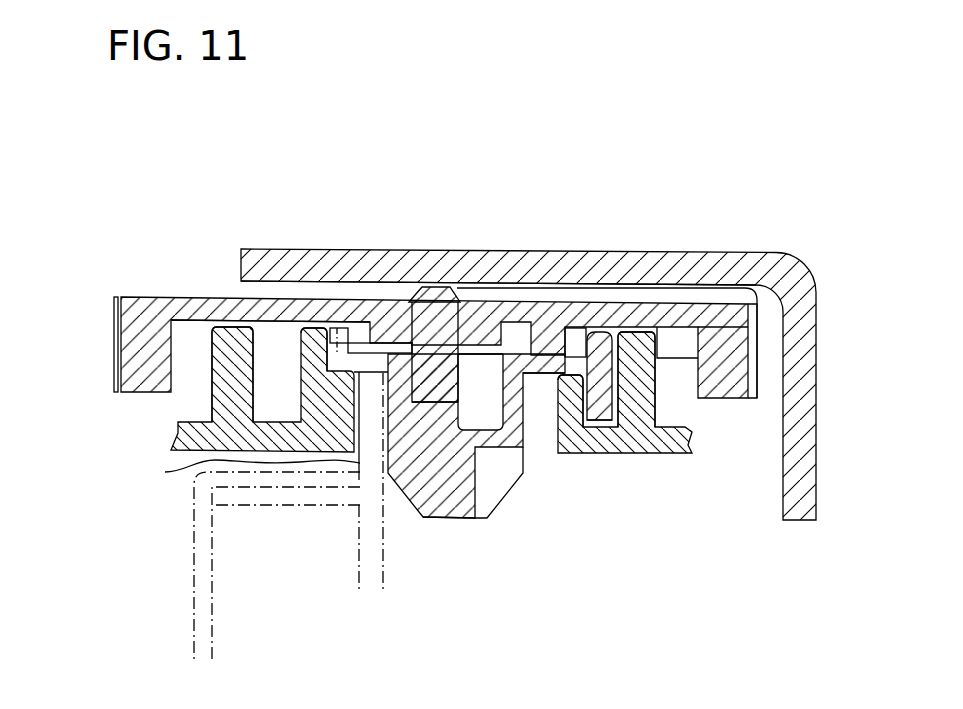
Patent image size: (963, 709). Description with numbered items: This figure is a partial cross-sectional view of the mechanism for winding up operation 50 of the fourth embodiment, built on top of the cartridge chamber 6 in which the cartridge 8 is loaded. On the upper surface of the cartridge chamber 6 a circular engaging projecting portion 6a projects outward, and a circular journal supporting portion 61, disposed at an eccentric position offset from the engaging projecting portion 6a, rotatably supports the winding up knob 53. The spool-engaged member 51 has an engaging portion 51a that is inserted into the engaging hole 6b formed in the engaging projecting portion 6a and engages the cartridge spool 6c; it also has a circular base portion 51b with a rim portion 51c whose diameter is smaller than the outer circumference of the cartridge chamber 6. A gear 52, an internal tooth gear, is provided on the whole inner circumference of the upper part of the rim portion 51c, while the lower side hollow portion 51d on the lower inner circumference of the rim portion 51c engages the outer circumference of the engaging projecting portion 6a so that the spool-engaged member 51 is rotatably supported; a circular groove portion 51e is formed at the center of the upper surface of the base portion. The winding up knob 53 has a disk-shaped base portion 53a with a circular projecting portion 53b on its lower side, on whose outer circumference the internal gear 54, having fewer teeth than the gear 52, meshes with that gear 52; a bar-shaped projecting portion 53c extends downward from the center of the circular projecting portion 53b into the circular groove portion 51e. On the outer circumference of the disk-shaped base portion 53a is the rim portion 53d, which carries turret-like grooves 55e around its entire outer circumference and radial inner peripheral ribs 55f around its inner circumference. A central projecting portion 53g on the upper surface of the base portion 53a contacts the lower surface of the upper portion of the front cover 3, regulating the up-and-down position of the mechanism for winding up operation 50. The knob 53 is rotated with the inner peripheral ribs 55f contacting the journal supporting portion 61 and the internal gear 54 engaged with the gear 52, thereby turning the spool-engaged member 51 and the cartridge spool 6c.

The front cover 3 is at (807, 262).
The mechanism for winding up operation 50 is at (108, 346).
The spool-engaged member 51 is at (510, 512).
The engaging portion 51a is at (437, 517).
The circular base portion 51b is at (542, 367).
The rim portion 51c is at (598, 343).
The lower side hollow portion 51d is at (603, 415).
The circular groove portion 51e is at (480, 372).
The gear 52 is at (576, 343).
The winding up knob 53 is at (163, 290).
The disk-shaped base portion 53a is at (215, 310).
The circular projecting portion 53b is at (355, 340).
The bar-shaped projecting portion 53c is at (442, 392).
The rim portion 53d is at (735, 335).
The central projecting portion 53g is at (433, 293).
The internal gear 54 is at (318, 283).
The turret-like grooves 55e is at (758, 353).
The inner peripheral ribs 55f is at (177, 341).
The cartridge chamber 6 is at (666, 455).
The engaging projecting portion 6a is at (328, 400).
The engaging hole 6b is at (244, 472).
The cartridge spool 6c is at (370, 500).
The journal supporting portion 61 is at (210, 413).
The cartridge 8 is at (193, 605).